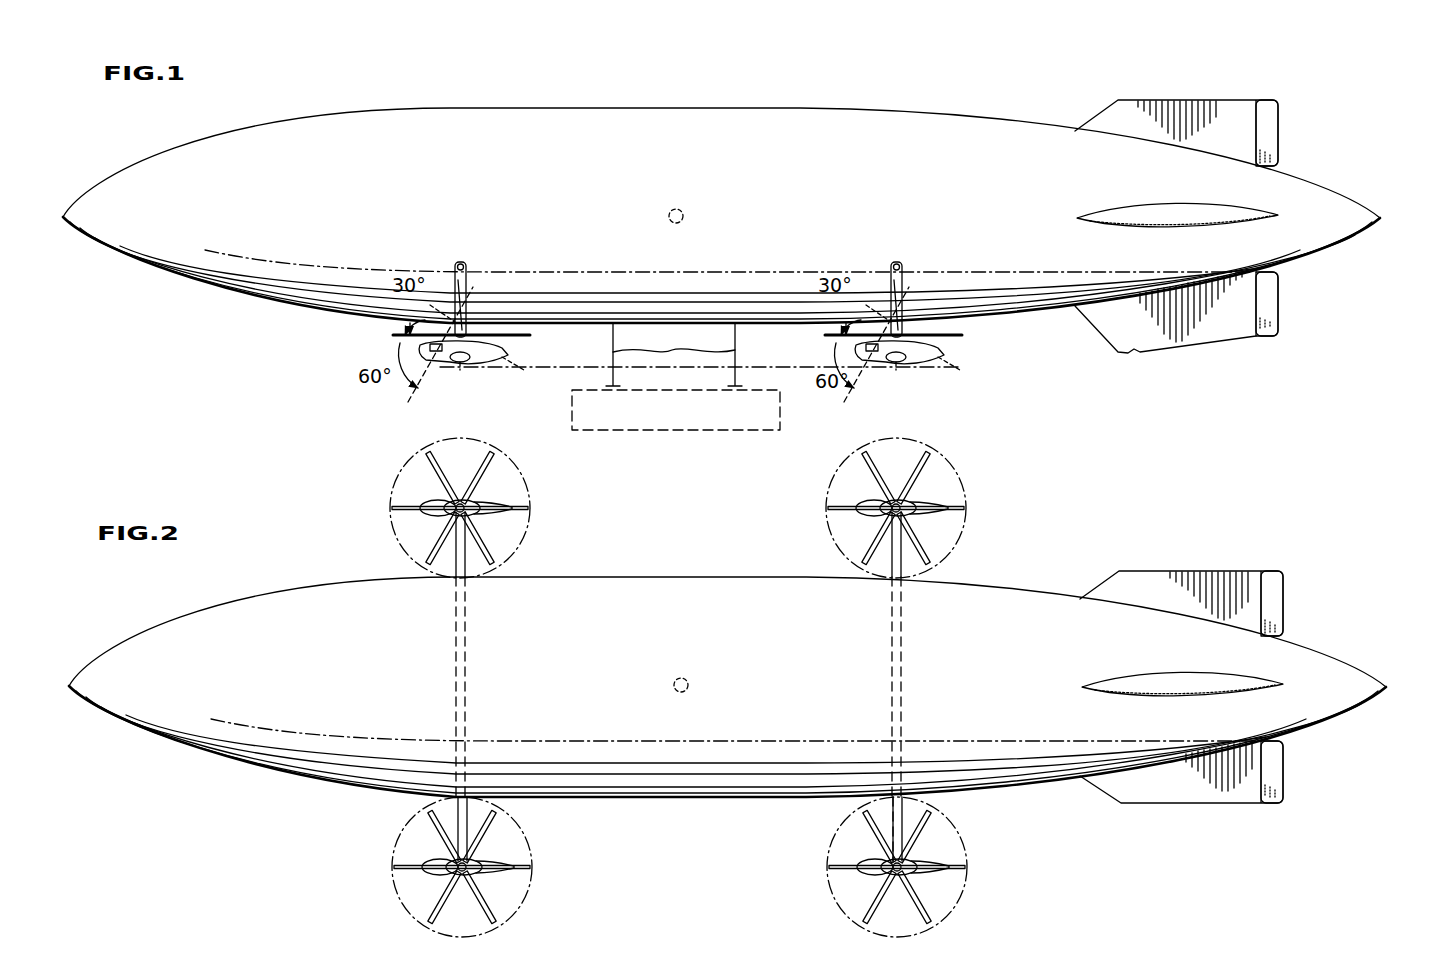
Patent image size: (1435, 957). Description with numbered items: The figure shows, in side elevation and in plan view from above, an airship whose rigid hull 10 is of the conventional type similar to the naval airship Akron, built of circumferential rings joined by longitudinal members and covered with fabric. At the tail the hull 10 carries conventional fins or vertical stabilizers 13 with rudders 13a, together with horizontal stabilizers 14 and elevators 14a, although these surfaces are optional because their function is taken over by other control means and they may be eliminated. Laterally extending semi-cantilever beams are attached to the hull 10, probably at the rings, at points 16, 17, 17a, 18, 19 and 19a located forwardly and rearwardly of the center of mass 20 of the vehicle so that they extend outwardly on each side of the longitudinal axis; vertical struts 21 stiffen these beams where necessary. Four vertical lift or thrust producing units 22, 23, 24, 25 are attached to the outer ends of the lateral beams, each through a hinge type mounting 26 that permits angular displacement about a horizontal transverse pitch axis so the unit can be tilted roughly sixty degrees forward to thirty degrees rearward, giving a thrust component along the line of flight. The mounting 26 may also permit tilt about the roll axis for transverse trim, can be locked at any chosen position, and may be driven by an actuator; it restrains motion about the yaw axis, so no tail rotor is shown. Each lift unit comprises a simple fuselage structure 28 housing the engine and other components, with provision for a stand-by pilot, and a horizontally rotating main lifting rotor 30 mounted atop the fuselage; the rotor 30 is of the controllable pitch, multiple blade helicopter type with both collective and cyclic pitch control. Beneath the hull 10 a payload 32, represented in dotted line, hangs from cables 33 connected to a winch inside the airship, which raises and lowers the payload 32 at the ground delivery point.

In FIG. 1, the hull 10 is at (332, 108).
In FIG. 1, the vertical stabilizers 13 is at (1212, 100).
In FIG. 2, the vertical stabilizers 13 is at (1118, 685).
In FIG. 1, the rudders 13a is at (1272, 126).
In FIG. 1, the horizontal stabilizers 14 is at (1102, 210).
In FIG. 2, the horizontal stabilizers 14 is at (1172, 572).
In FIG. 2, the elevators 14a is at (1278, 592).
In FIG. 2, the attachment point 16 is at (466, 667).
In FIG. 2, the attachment point 17 is at (464, 700).
In FIG. 1, the attachment point 17a is at (461, 262).
In FIG. 2, the attachment point 18 is at (902, 667).
In FIG. 2, the attachment point 19 is at (902, 700).
In FIG. 1, the attachment point 19a is at (897, 262).
In FIG. 1, the center of mass 20 is at (677, 209).
In FIG. 2, the center of mass 20 is at (688, 680).
In FIG. 1, the vertical struts 21 is at (466, 280).
In FIG. 2, the vertical lift or thrust producing unit 22 is at (425, 486).
In FIG. 2, the vertical lift or thrust producing unit 23 is at (430, 890).
In FIG. 2, the vertical lift or thrust producing unit 24 is at (868, 486).
In FIG. 2, the vertical lift or thrust producing unit 25 is at (932, 892).
In FIG. 2, the hinge type mounting 26 is at (470, 515).
In FIG. 2, the fuselage structure 28 is at (436, 514).
In FIG. 1, the main lifting rotor 30 is at (515, 337).
In FIG. 2, the main lifting rotor 30 is at (490, 468).
In FIG. 1, the payload 32 is at (693, 428).
In FIG. 1, the cables 33 is at (674, 354).